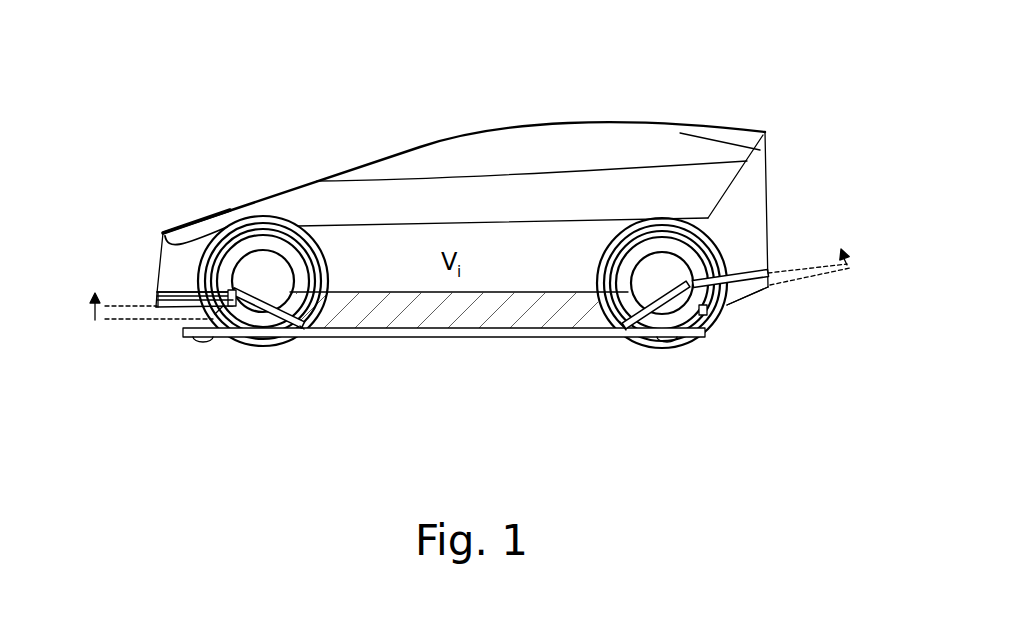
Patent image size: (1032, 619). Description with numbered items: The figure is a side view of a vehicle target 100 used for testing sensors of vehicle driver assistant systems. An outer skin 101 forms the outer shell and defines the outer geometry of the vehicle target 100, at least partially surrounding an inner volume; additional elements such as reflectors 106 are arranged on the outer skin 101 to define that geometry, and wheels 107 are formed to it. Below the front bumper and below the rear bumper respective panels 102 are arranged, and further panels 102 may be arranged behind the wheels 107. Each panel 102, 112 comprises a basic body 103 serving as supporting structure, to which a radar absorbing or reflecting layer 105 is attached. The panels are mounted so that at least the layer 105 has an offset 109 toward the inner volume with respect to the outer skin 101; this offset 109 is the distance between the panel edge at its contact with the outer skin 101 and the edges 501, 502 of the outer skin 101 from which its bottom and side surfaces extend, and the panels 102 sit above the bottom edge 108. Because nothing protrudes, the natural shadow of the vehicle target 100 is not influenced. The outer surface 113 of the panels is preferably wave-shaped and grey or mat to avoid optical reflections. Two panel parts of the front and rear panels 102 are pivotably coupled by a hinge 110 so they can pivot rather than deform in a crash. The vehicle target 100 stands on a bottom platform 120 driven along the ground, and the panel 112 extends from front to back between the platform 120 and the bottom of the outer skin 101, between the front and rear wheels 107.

The vehicle target 100 is at (607, 119).
The outer skin 101 is at (327, 200).
The panel 102 is at (495, 374).
The basic body 103 is at (185, 305).
The radar absorbing or reflecting layer 105 is at (177, 293).
The reflector 106 is at (210, 231).
The wheel 107 is at (278, 272).
The bottom edge 108 is at (392, 349).
The offset 109 is at (95, 318).
The hinge 110 is at (228, 306).
The panel 112 is at (360, 305).
The outer surface 113 is at (186, 310).
The bottom platform 120 is at (427, 337).
The edge 501 is at (160, 302).
The edge 502 is at (770, 290).